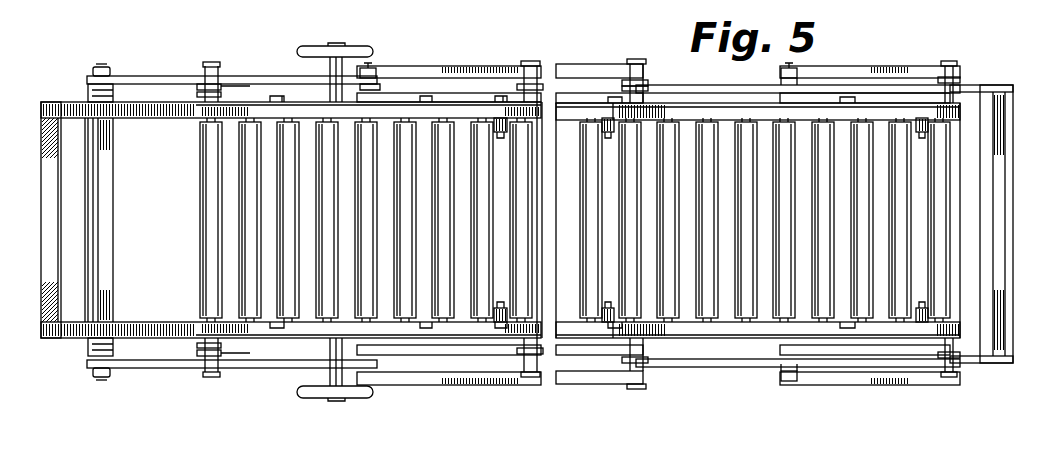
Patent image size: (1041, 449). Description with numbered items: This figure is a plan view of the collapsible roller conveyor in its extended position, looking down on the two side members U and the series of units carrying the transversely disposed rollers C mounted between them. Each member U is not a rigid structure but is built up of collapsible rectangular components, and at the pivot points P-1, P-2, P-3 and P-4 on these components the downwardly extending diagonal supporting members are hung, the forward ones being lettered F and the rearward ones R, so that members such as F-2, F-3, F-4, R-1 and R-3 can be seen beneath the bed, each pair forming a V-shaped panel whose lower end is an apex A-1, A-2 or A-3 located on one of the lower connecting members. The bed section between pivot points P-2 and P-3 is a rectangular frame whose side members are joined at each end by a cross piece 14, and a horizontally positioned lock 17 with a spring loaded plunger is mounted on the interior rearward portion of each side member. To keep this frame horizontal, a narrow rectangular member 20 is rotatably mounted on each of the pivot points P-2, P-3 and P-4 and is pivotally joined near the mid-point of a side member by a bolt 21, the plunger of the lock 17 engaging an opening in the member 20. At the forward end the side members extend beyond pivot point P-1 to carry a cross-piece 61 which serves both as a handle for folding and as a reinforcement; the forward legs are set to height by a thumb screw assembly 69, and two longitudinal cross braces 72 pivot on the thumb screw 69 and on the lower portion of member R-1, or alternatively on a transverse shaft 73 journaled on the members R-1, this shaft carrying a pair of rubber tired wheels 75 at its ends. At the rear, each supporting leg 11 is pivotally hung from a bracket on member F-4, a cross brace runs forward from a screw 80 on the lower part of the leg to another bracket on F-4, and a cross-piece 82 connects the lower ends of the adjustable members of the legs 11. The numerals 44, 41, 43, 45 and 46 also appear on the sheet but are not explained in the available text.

The cross piece 14 is at (100, 5).
The conveyor section 44 is at (246, 5).
The conveyor section 41 is at (322, 5).
The conveyor section 43 is at (405, 5).
The apex A-2 is at (485, 6).
The conveyor section 45 is at (620, 5).
The conveyor section 46 is at (690, 5).
The member U is at (182, 120).
The cross-piece 61 is at (41, 136).
The thumb screw assembly 69 is at (108, 66).
The cross brace 72 is at (168, 77).
The pivot point P-1 is at (212, 68).
The rearwardly extending diagonal supporting member R-1 is at (262, 86).
The bolt 21 is at (278, 97).
The rubber tired wheel 75 is at (306, 50).
The transverse shaft 73 is at (337, 62).
The apex A-1 is at (377, 70).
The forwardly extending diagonal supporting member F-2 is at (441, 66).
The narrow rectangular member 20 is at (470, 100).
The pivot point P-2 is at (532, 63).
The forwardly extending diagonal supporting member F-3 is at (575, 66).
The pivot point P-3 is at (641, 67).
The rearwardly extending diagonal supporting member R-3 is at (697, 85).
The apex A-3 is at (791, 70).
The forwardly extending diagonal supporting member F-4 is at (889, 66).
The pivot point P-4 is at (949, 65).
The rearward supporting leg 11 is at (975, 85).
The screw 80 is at (990, 85).
The cross-piece 82 is at (1000, 262).
The lock 17 is at (601, 122).
The roller C is at (245, 211).